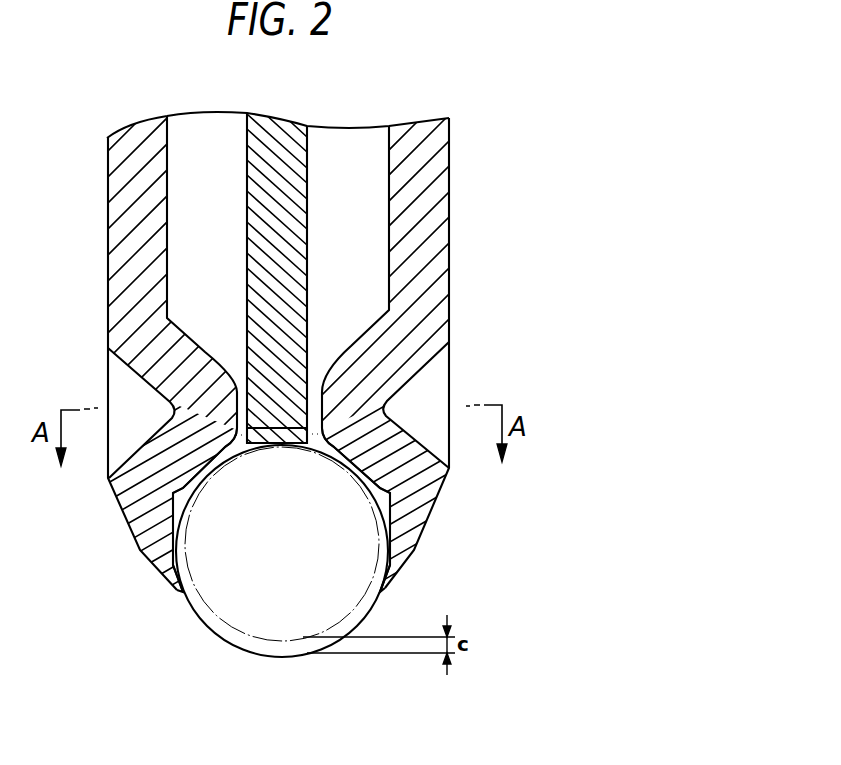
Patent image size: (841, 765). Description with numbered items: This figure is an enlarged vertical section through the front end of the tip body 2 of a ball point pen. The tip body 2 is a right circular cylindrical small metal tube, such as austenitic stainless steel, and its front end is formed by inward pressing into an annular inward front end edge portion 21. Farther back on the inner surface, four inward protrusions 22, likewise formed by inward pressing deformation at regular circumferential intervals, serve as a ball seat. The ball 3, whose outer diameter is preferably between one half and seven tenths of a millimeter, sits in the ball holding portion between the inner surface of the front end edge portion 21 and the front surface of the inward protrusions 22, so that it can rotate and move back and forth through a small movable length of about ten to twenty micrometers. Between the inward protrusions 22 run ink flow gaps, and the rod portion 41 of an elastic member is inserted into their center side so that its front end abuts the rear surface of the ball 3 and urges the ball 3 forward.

The tip body 2 is at (136, 212).
The rod portion 41 is at (297, 257).
The inward protrusions 22 is at (188, 455).
The ball 3 is at (343, 537).
The front end edge portion 21 is at (181, 590).